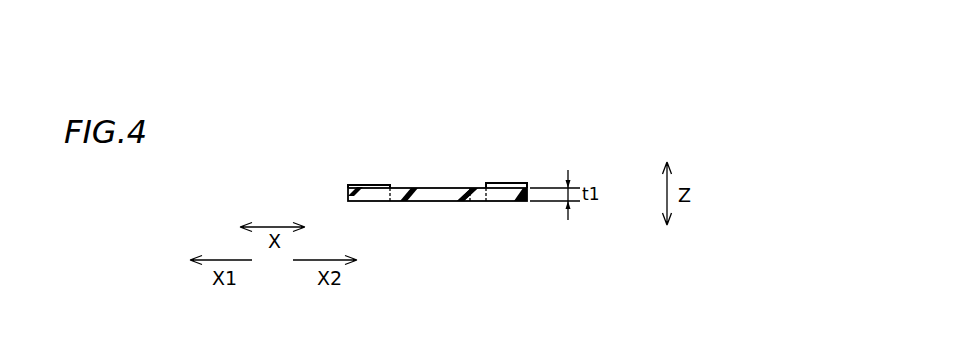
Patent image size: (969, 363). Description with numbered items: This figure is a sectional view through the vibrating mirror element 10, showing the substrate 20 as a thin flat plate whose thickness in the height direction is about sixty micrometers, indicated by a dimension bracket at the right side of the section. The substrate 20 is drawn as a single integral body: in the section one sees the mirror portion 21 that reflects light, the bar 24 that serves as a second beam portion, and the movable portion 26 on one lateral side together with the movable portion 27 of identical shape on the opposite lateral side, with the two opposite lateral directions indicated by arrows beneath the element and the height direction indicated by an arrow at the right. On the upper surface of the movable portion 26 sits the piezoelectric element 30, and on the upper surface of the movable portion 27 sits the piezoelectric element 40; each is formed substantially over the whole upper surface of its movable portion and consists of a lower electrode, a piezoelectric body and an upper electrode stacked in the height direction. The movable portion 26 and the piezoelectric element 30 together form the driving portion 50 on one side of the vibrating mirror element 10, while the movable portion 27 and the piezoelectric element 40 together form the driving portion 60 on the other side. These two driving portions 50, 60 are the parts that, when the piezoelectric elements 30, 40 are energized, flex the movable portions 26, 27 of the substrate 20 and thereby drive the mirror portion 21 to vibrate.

The vibrating mirror element 10 is at (587, 148).
The substrate 20 is at (437, 221).
The bar 24 is at (430, 201).
The piezoelectric element 30 is at (347, 187).
The movable portion 26 is at (348, 194).
The driving portion 50 is at (365, 170).
The mirror portion 21 is at (470, 188).
The piezoelectric element 40 is at (502, 183).
The driving portion 60 is at (519, 159).
The movable portion 27 is at (513, 201).